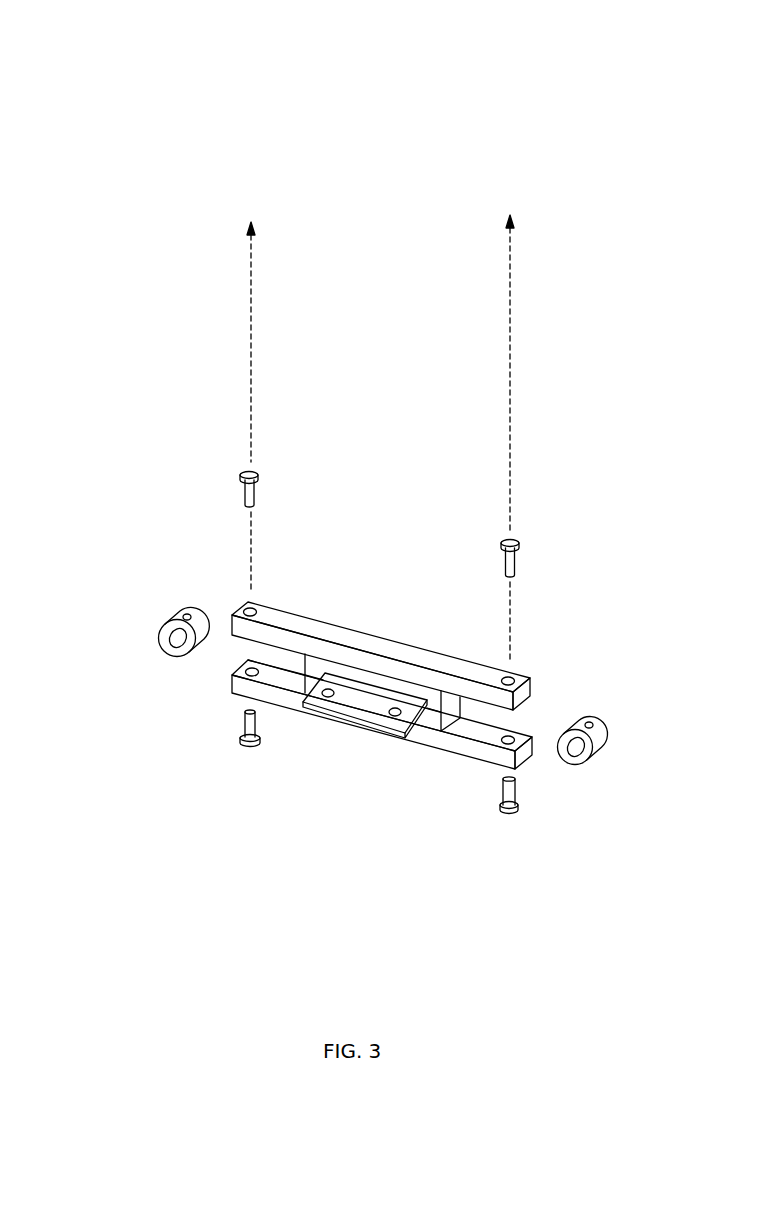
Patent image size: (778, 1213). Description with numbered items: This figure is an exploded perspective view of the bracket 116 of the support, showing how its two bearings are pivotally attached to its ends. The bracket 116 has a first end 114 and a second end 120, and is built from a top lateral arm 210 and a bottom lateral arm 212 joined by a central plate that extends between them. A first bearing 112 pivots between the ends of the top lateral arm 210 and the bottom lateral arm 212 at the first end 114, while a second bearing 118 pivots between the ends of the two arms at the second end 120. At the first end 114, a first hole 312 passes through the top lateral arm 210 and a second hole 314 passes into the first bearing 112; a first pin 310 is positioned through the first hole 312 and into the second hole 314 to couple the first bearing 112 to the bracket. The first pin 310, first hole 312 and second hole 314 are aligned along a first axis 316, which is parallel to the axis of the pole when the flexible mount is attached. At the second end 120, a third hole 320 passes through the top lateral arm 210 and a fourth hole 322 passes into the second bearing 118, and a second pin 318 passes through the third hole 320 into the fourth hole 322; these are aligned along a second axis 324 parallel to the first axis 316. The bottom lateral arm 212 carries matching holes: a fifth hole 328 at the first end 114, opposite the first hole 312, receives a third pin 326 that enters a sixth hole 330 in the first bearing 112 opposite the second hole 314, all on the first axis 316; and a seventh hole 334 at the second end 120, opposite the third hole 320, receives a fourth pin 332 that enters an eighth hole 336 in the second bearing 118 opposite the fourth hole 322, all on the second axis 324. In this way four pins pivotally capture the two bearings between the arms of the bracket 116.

The bracket 116 is at (608, 115).
The first end 114 is at (478, 866).
The second end 120 is at (219, 811).
The top lateral arm 210 is at (375, 636).
The bottom lateral arm 212 is at (430, 735).
The first bearing 112 is at (596, 743).
The second bearing 118 is at (158, 640).
The sixth hole 330 is at (616, 787).
The eighth hole 336 is at (158, 683).
The first pin 310 is at (516, 558).
The second pin 318 is at (257, 495).
The third pin 326 is at (514, 813).
The fourth pin 332 is at (252, 748).
The first hole 312 is at (512, 676).
The third hole 320 is at (253, 608).
The fifth hole 328 is at (506, 745).
The seventh hole 334 is at (250, 676).
The second hole 314 is at (589, 721).
The fourth hole 322 is at (187, 612).
The first axis 316 is at (512, 303).
The second axis 324 is at (253, 307).